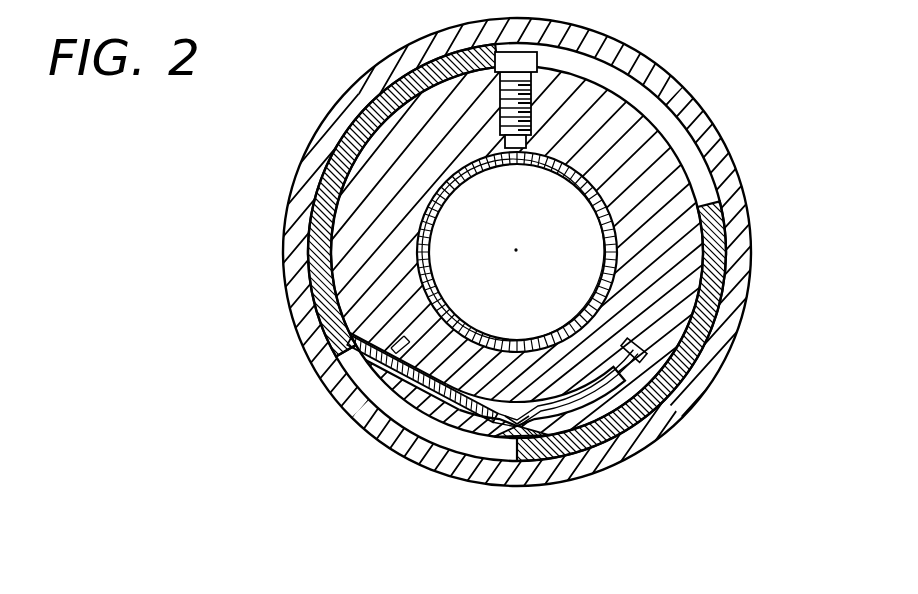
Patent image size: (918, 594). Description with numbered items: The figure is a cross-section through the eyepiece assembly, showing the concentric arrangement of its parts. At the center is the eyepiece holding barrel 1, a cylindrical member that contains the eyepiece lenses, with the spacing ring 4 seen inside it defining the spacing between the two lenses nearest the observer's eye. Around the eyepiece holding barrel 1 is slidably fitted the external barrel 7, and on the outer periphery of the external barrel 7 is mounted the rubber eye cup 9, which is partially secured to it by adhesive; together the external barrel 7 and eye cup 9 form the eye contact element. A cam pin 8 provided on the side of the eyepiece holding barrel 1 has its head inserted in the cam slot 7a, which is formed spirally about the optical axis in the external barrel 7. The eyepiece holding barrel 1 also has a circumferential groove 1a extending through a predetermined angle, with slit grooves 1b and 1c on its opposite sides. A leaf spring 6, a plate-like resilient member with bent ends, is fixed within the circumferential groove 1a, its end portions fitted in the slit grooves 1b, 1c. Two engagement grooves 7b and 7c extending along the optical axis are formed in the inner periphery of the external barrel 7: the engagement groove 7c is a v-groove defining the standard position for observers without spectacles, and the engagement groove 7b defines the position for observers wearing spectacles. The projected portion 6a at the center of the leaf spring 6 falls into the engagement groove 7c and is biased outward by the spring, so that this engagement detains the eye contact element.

The eyepiece holding barrel 1 is at (626, 120).
The circumferential groove 1a is at (624, 402).
The slit groove 1b is at (352, 354).
The slit groove 1c is at (660, 345).
The spacing ring 4 is at (416, 244).
The leaf spring 6 is at (440, 408).
The projected portion 6a is at (513, 432).
The external barrel 7 is at (322, 150).
The cam slot 7a is at (690, 140).
The engagement groove 7b is at (348, 332).
The engagement groove 7c is at (546, 444).
The cam pin 8 is at (526, 110).
The eye cup 9 is at (752, 242).